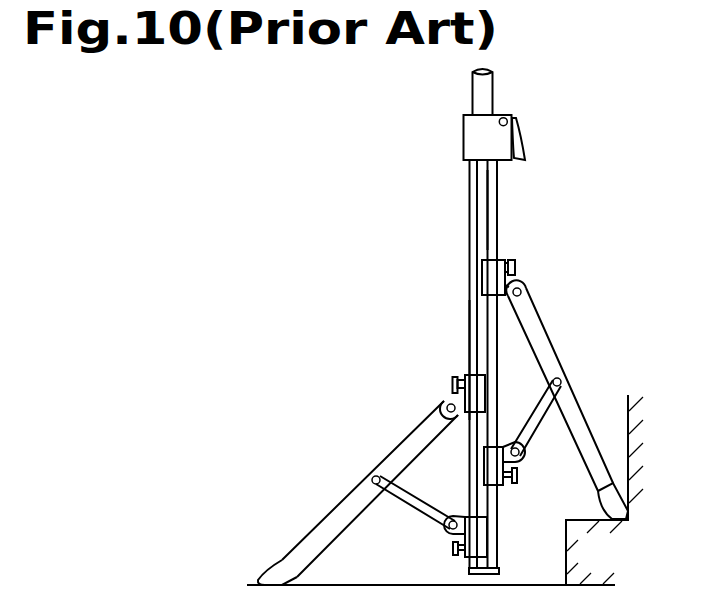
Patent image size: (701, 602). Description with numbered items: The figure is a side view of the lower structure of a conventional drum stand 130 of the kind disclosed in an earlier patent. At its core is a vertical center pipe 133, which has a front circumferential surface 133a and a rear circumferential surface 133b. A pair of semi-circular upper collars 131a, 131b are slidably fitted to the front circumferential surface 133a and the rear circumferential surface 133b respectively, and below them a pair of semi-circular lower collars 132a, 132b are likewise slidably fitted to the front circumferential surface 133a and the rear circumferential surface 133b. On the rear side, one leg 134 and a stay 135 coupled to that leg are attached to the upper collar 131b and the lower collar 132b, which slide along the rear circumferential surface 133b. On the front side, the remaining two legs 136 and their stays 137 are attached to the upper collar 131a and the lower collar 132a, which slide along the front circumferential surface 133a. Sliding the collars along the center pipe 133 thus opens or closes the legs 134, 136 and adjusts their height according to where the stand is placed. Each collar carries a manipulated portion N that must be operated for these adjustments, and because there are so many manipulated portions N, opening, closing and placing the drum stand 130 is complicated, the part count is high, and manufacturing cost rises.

The drum stand 130 is at (592, 116).
The upper collar 131a is at (468, 376).
The upper collar 131b is at (497, 262).
The lower collar 132a is at (466, 540).
The lower collar 132b is at (493, 476).
The center pipe 133 is at (470, 207).
The front circumferential surface 133a is at (476, 295).
The rear circumferential surface 133b is at (494, 216).
The leg 134 is at (537, 326).
The stay 135 is at (536, 420).
The legs 136 is at (357, 488).
The stays 137 is at (424, 508).
The manipulated portions N is at (516, 269).